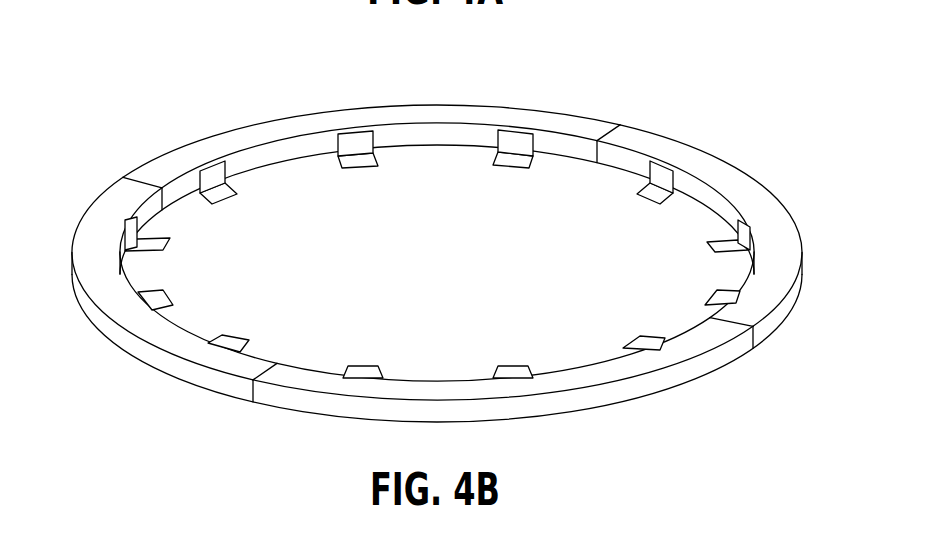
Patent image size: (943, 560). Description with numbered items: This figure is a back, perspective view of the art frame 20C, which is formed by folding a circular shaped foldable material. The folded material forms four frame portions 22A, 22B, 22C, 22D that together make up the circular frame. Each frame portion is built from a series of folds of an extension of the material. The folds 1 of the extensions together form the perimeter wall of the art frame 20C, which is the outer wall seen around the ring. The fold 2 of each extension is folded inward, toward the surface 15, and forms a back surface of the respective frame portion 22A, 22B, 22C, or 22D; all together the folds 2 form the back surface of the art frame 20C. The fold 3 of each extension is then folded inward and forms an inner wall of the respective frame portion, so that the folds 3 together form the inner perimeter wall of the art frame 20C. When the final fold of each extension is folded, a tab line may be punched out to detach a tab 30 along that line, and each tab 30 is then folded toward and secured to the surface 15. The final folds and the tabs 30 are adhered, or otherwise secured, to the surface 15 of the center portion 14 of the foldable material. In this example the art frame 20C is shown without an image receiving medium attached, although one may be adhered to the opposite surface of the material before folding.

The fold 1 is at (836, 328).
The fold 2 is at (437, 240).
The fold 3 is at (437, 197).
The center portion 14 is at (452, 258).
The surface 15 is at (640, 303).
The art frame 20C is at (430, 246).
The frame portion 22A is at (714, 156).
The frame portion 22B is at (379, 103).
The frame portion 22C is at (83, 213).
The frame portion 22D is at (574, 414).
The tab 30 is at (140, 234).